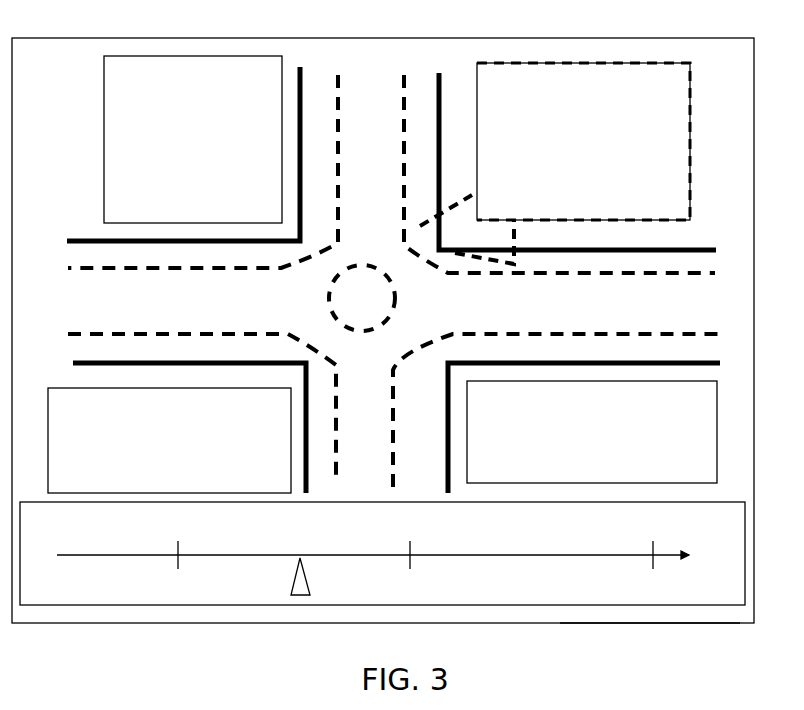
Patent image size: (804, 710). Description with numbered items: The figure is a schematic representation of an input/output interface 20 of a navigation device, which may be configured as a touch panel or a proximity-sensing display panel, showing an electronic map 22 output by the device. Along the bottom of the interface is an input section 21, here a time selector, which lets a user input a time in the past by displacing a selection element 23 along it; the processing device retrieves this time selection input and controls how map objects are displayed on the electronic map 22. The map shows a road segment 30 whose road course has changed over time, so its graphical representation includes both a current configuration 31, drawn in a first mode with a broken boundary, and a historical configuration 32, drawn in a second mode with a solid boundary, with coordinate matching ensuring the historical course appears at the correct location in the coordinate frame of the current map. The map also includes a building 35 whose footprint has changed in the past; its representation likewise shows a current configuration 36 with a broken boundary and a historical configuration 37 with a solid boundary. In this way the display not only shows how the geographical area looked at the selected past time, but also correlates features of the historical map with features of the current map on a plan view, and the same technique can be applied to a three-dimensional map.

The input/output interface 20 is at (643, 623).
The input section 21 is at (727, 606).
The electronic map 22 is at (748, 68).
The selection element 23 is at (291, 595).
The road segment 30 is at (357, 149).
The current configuration 31 is at (339, 75).
The historical configuration 32 is at (302, 76).
The building 35 is at (563, 156).
The current configuration 36 is at (457, 198).
The historical configuration 37 is at (503, 219).